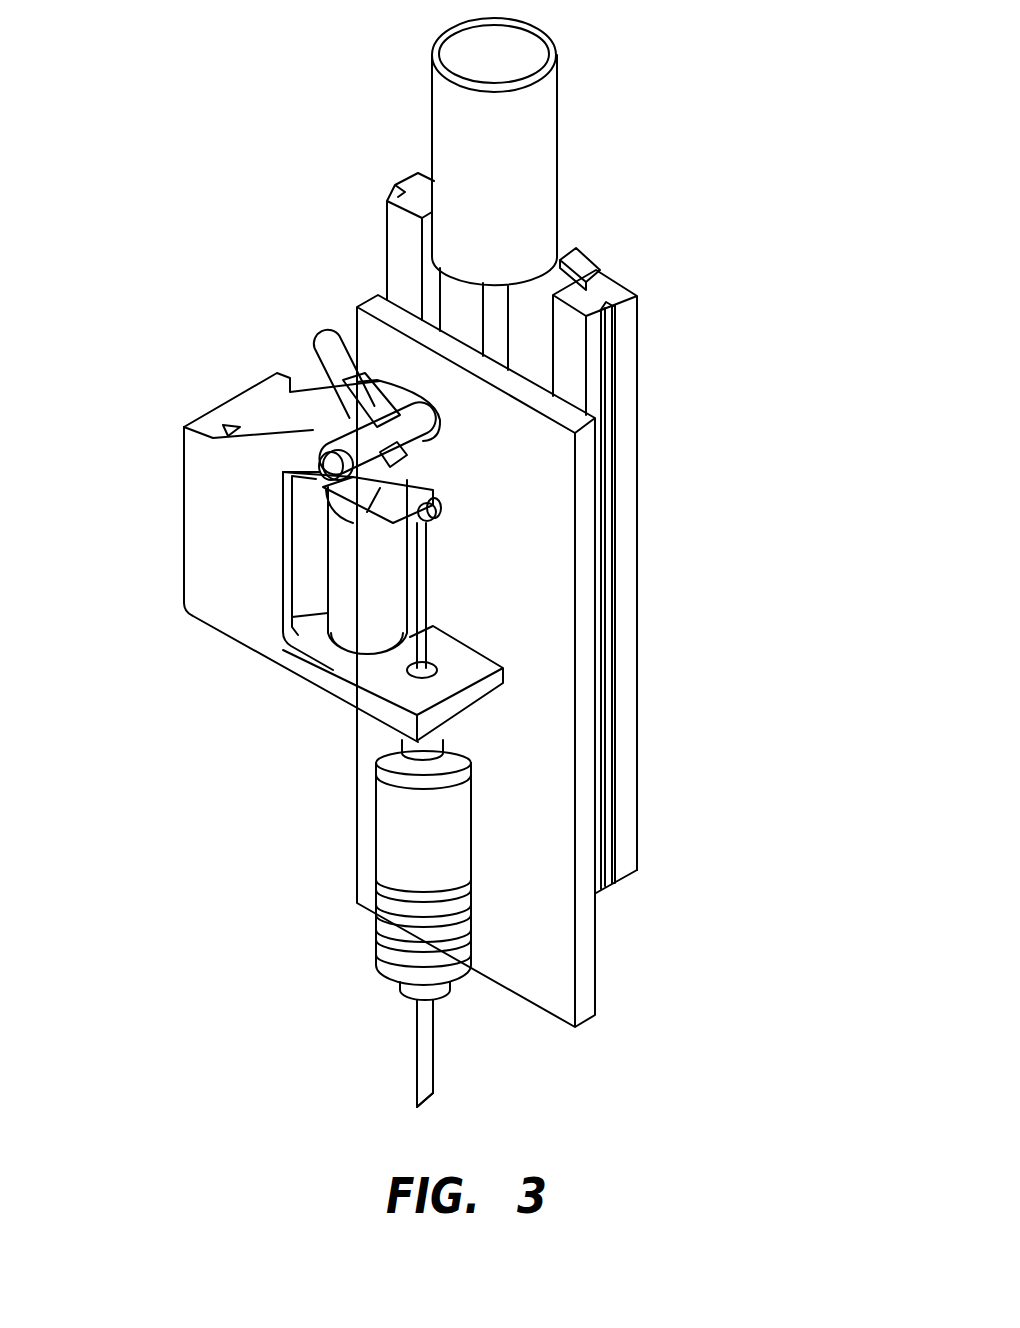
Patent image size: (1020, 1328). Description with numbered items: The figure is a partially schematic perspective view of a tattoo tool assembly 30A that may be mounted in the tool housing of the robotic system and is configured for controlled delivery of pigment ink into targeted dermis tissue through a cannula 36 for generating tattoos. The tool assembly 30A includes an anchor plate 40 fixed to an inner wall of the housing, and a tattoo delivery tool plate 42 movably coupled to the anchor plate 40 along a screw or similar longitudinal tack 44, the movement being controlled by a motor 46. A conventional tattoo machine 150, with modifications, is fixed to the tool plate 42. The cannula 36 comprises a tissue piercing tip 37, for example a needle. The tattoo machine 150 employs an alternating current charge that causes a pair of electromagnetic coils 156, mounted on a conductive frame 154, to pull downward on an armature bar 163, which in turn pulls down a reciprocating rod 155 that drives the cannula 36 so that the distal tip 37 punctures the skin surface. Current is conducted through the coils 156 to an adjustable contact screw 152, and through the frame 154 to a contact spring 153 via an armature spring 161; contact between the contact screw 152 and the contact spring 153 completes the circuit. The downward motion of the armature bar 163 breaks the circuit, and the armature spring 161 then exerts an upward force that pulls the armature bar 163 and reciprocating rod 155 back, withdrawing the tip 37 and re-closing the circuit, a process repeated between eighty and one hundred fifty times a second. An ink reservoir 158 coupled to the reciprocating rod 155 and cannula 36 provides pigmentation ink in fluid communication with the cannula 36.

The tool assembly 30A is at (736, 212).
The cannula 36 is at (433, 1040).
The tissue piercing tip 37 is at (436, 1108).
The anchor plate 40 is at (637, 426).
The tattoo delivery tool plate 42 is at (603, 928).
The longitudinal tack 44 is at (562, 276).
The motor 46 is at (558, 125).
The tattoo machine 150 is at (190, 355).
The adjustable contact screw 152 is at (357, 362).
The contact spring 153 is at (420, 462).
The conductive frame 154 is at (184, 488).
The reciprocating rod 155 is at (430, 570).
The electromagnetic coils 156 is at (362, 625).
The ink reservoir 158 is at (375, 840).
The armature spring 161 is at (247, 400).
The armature bar 163 is at (327, 540).